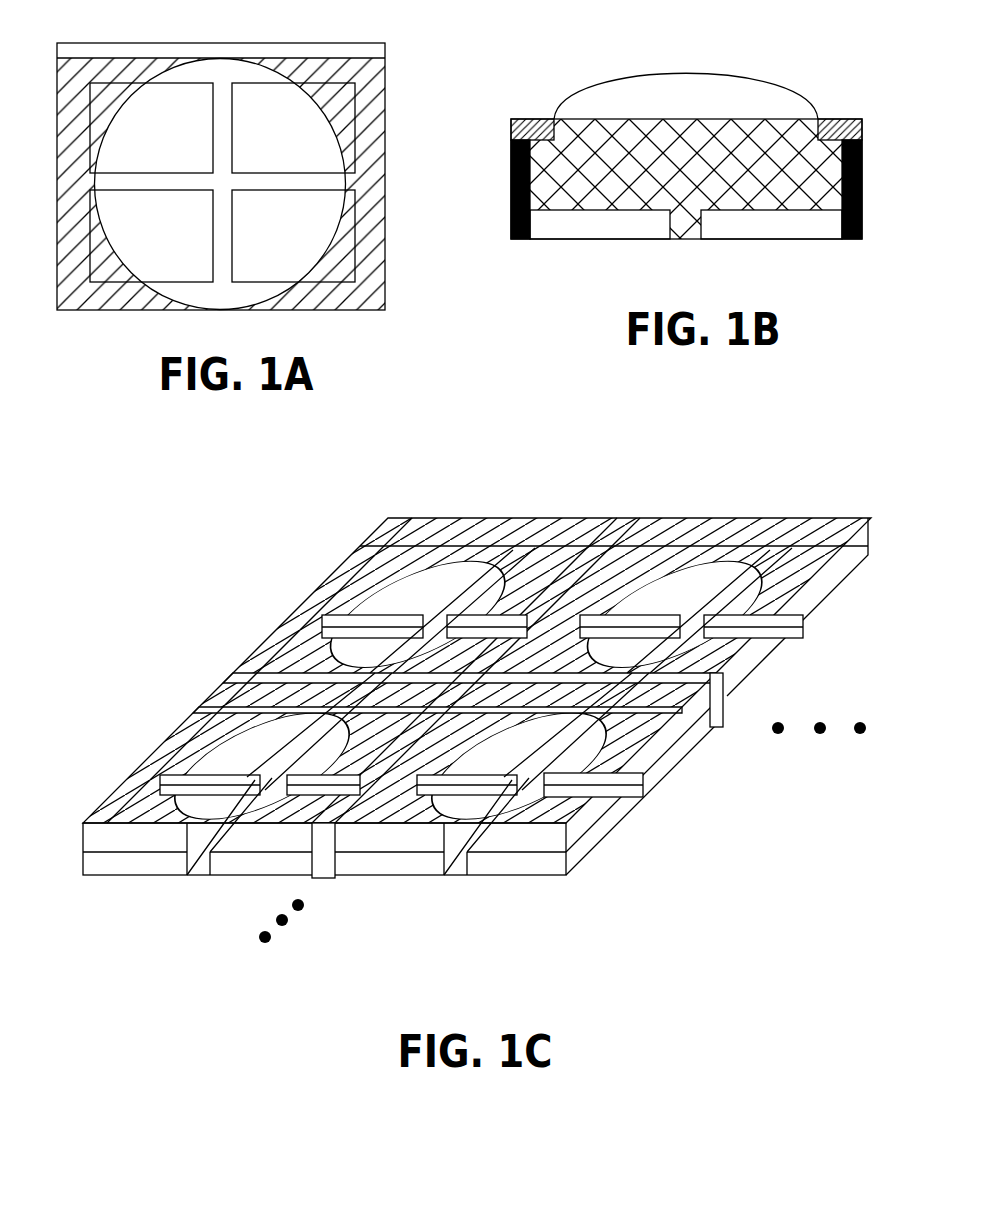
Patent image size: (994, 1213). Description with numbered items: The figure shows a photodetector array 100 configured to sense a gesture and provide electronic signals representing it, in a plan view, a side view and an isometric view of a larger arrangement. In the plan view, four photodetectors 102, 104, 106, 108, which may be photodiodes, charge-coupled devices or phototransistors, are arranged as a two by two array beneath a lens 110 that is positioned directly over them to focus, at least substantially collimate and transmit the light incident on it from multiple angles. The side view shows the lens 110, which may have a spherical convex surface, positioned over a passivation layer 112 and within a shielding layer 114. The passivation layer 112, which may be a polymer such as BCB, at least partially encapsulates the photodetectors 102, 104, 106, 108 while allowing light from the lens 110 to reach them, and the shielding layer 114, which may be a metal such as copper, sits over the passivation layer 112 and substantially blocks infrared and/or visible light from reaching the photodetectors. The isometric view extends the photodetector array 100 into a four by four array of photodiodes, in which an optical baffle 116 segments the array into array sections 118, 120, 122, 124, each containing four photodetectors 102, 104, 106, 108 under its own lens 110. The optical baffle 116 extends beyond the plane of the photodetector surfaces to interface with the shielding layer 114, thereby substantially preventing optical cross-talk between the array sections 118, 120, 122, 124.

In FIG. 1C, the photodetector array 100 is at (477, 679).
In FIG. 1A, the photodetector 102 is at (184, 108).
In FIG. 1C, the photodetector 102 is at (377, 587).
In FIG. 1A, the photodetector 104 is at (257, 100).
In FIG. 1C, the photodetector 104 is at (530, 560).
In FIG. 1A, the photodetector 106 is at (118, 265).
In FIG. 1B, the photodetector 106 is at (615, 228).
In FIG. 1C, the photodetector 106 is at (273, 650).
In FIG. 1A, the photodetector 108 is at (327, 265).
In FIG. 1B, the photodetector 108 is at (787, 228).
In FIG. 1C, the photodetector 108 is at (317, 622).
In FIG. 1B, the lens 110 is at (703, 82).
In FIG. 1C, the lens 110 is at (487, 575).
In FIG. 1B, the passivation layer 112 is at (862, 172).
In FIG. 1B, the shielding layer 114 is at (535, 118).
In FIG. 1C, the shielding layer 114 is at (130, 795).
In FIG. 1C, the optical baffle 116 is at (720, 670).
In FIG. 1C, the array section 118 is at (330, 560).
In FIG. 1C, the array section 120 is at (797, 558).
In FIG. 1C, the array section 122 is at (187, 822).
In FIG. 1C, the array section 124 is at (577, 800).